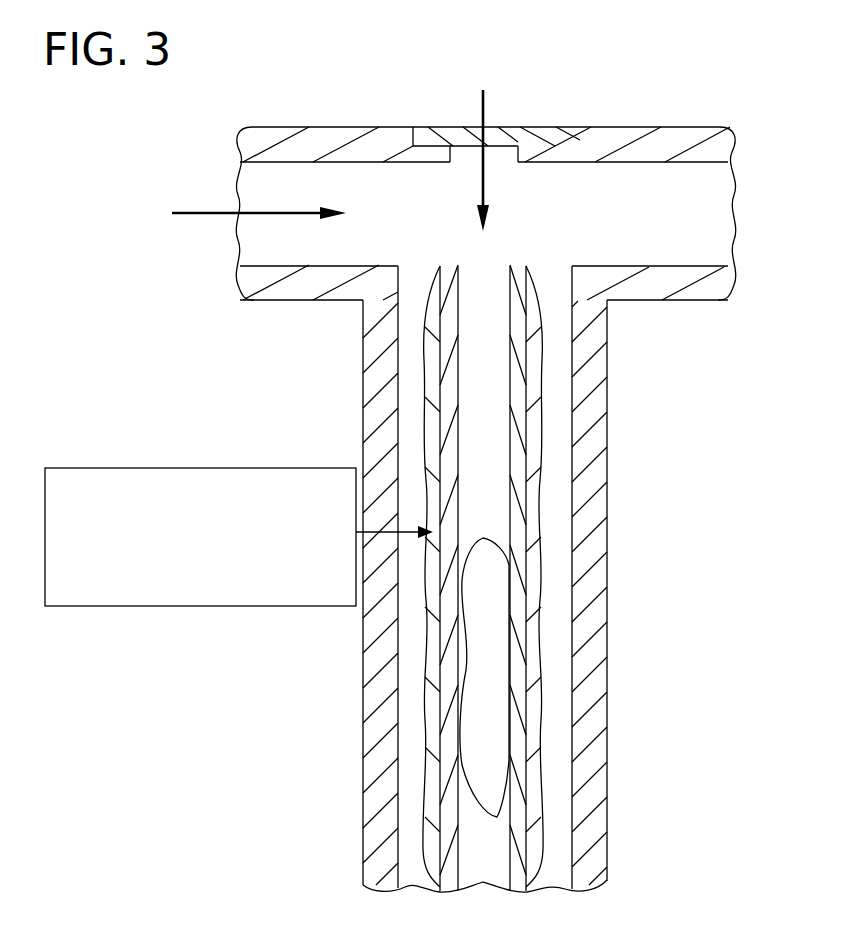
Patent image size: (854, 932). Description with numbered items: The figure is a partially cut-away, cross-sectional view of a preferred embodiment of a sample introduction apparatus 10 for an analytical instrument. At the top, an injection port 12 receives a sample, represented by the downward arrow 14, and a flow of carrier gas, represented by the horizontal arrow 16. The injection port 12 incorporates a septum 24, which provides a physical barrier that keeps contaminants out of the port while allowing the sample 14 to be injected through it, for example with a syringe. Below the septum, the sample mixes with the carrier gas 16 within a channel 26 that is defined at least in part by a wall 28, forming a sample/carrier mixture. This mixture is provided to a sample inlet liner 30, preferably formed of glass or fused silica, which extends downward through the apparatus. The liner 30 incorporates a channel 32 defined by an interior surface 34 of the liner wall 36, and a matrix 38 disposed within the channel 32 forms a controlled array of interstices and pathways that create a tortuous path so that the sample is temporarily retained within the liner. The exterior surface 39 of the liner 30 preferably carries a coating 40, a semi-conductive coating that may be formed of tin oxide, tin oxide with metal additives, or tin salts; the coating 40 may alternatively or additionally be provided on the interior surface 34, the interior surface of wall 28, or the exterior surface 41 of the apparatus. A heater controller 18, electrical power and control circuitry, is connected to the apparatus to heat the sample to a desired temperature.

The sample introduction apparatus 10 is at (183, 152).
The injection port 12 is at (524, 100).
The sample 14 is at (486, 180).
The carrier gas 16 is at (260, 212).
The heater controller 18 is at (230, 468).
The septum 24 is at (538, 127).
The channel 26 is at (558, 657).
The wall 28 is at (398, 288).
The sample inlet liner 30 is at (560, 255).
The channel 32 is at (483, 403).
The interior surface 34 is at (508, 463).
The liner wall 36 is at (520, 398).
The matrix 38 is at (502, 643).
The exterior surface 39 is at (441, 700).
The coating 40 is at (535, 507).
The exterior surface 41 is at (607, 720).